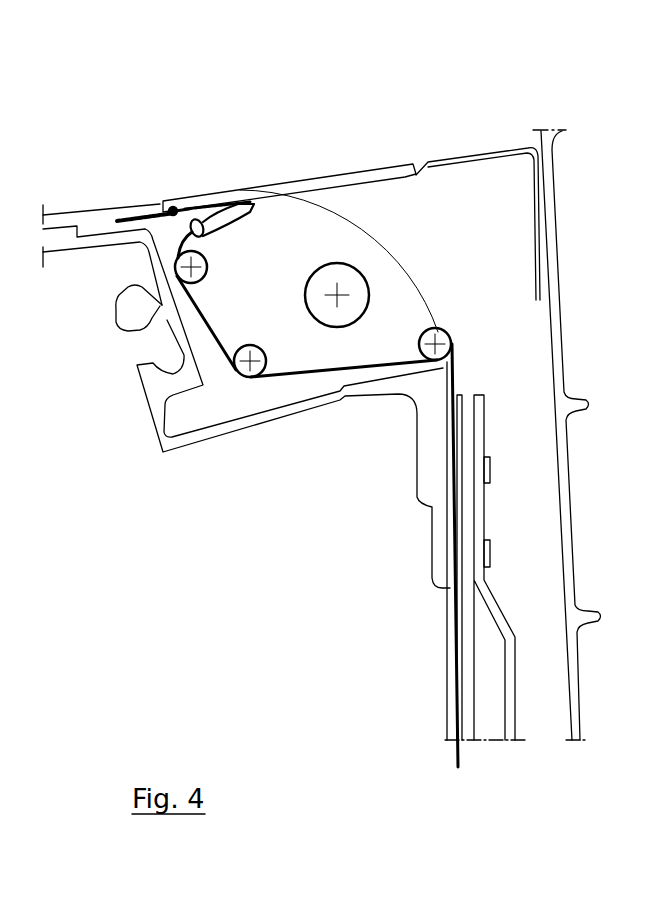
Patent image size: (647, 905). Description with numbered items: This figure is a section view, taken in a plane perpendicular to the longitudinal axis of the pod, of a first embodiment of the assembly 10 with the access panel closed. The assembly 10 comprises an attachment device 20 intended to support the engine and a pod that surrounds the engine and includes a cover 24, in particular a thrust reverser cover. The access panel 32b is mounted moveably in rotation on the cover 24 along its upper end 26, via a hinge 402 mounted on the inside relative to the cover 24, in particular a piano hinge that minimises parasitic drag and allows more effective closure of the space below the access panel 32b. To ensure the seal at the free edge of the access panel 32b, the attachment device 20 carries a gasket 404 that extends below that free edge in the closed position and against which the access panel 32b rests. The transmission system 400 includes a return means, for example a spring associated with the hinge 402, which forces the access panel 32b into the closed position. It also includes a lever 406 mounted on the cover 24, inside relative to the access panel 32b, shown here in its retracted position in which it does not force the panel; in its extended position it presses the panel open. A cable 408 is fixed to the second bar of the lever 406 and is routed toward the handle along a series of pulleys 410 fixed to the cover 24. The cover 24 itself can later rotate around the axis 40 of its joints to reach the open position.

The assembly 10 is at (139, 150).
The attachment device 20 is at (503, 121).
The cover 24 is at (83, 213).
The upper end 26 is at (167, 208).
The access panel 32b is at (300, 181).
The axis 40 is at (340, 292).
The transmission system 400 is at (183, 502).
The hinge 402 is at (177, 207).
The gasket 404 is at (427, 173).
The lever 406 is at (232, 227).
The cable 408 is at (293, 370).
The pulleys 410 is at (177, 265).